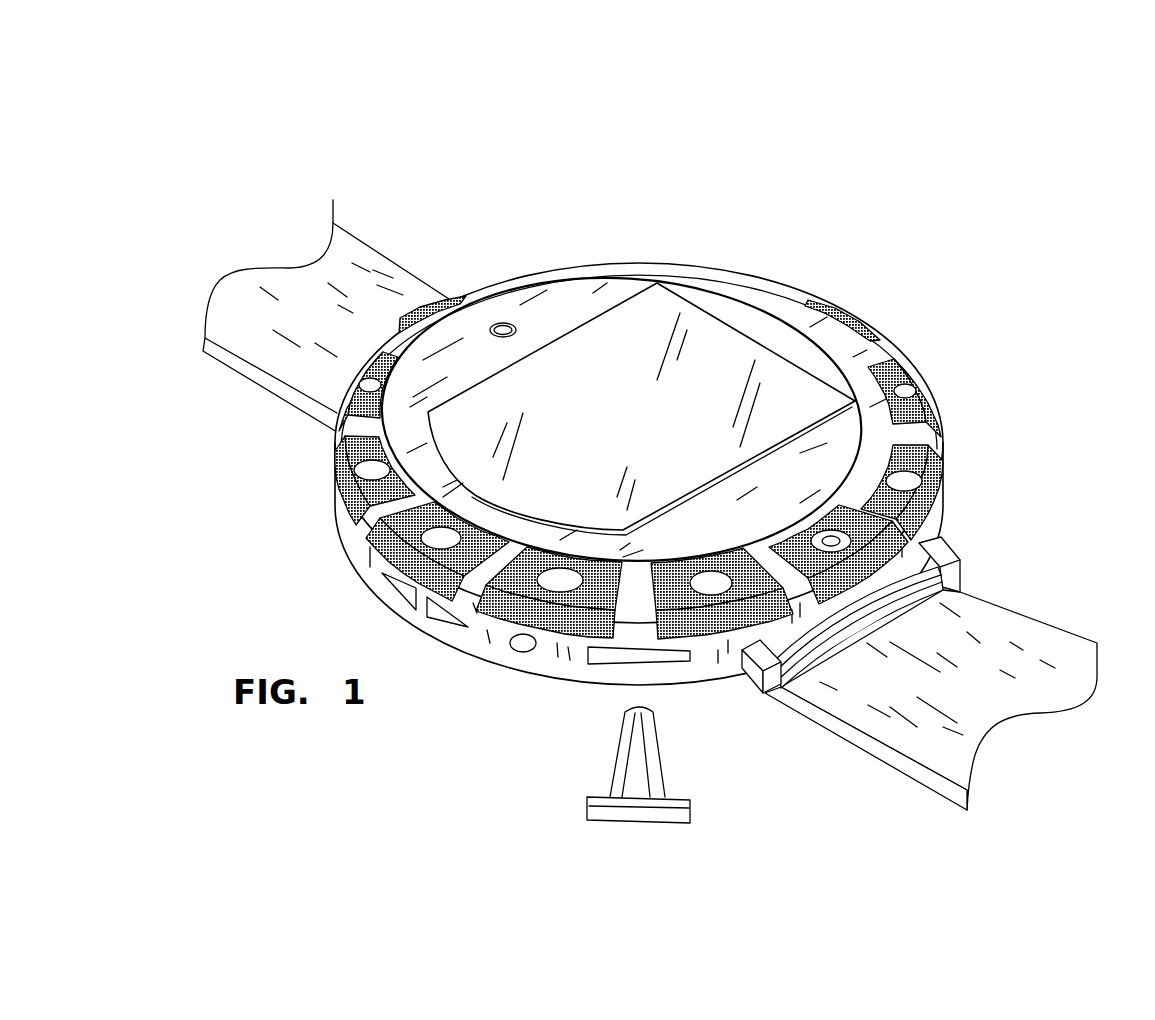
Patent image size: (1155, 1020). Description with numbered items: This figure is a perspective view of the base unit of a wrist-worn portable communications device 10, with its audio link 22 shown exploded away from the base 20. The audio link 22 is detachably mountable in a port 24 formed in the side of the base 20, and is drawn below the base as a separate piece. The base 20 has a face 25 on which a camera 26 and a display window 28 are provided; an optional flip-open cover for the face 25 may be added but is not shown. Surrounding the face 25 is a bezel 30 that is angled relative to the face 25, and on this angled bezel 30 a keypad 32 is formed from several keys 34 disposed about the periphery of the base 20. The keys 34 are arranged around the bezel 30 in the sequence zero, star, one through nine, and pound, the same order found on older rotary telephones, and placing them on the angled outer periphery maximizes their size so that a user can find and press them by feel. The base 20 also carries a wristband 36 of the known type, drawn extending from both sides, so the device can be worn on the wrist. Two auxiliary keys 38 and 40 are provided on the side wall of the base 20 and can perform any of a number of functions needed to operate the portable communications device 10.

The communications device 10 is at (770, 82).
The base 20 is at (780, 230).
The audio link 22 is at (587, 815).
The port 24 is at (705, 672).
The face 25 is at (572, 298).
The camera 26 is at (503, 322).
The display window 28 is at (628, 352).
The bezel 30 is at (935, 440).
The keypad 32 is at (915, 325).
The keys 34 is at (940, 403).
The wristband 36 is at (370, 273).
The auxiliary key 38 is at (402, 603).
The auxiliary key 40 is at (521, 653).